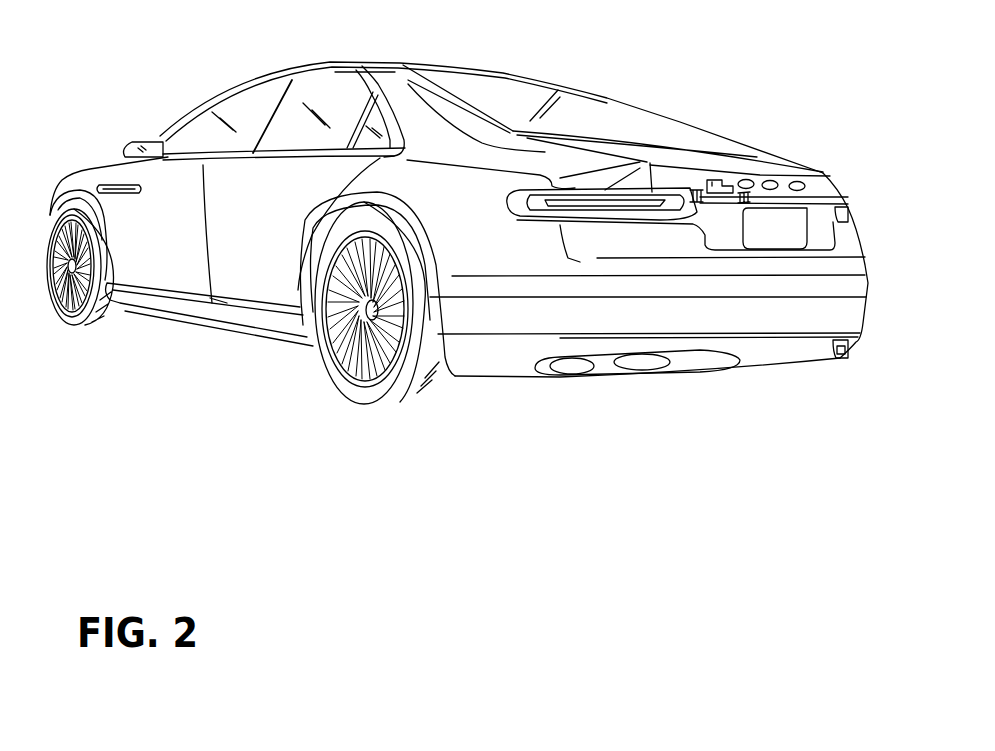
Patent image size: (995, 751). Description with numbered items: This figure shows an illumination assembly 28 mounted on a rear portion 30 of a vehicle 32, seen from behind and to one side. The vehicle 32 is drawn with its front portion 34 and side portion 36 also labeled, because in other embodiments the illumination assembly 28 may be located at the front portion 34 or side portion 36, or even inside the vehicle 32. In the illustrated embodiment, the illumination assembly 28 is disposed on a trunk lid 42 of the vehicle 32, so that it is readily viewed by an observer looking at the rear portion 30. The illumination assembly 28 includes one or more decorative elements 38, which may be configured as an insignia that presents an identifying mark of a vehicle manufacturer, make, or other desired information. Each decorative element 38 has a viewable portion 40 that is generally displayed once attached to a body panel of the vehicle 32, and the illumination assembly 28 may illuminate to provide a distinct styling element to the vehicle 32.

The illumination assembly 28 is at (810, 181).
The rear portion 30 is at (752, 167).
The vehicle 32 is at (310, 58).
The front portion 34 is at (73, 168).
The side portion 36 is at (258, 262).
The decorative element 38 is at (772, 188).
The viewable portion 40 is at (765, 195).
The trunk lid 42 is at (663, 176).